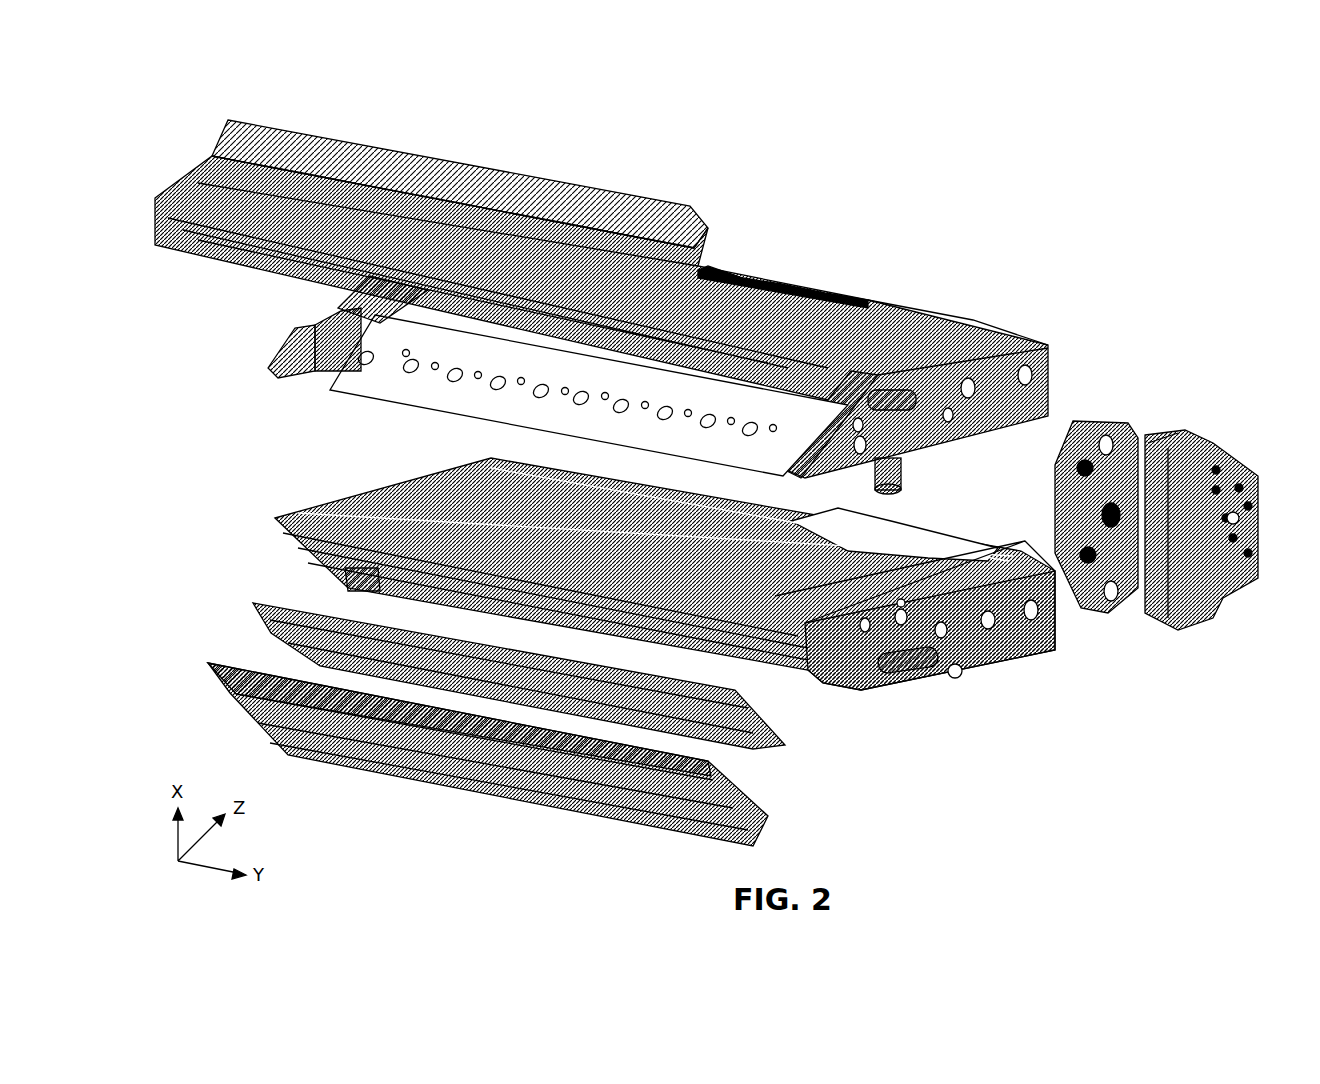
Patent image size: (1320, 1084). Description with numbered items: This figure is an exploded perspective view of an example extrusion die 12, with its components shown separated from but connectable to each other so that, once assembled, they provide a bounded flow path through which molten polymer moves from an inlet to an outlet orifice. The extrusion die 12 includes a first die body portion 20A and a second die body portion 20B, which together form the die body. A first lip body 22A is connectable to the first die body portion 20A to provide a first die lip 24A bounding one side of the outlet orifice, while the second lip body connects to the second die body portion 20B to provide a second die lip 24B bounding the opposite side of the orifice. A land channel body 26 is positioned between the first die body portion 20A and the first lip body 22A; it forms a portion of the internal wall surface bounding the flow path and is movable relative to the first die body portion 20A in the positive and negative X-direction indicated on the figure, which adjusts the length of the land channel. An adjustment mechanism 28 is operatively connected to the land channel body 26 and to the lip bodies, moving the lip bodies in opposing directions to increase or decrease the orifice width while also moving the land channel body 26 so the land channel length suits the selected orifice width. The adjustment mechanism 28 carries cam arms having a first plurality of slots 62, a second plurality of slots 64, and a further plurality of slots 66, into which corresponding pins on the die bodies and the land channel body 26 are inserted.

The extrusion die 12 is at (1187, 190).
The first die body portion 20A is at (1048, 628).
The second die body portion 20B is at (1040, 342).
The first lip body 22A is at (762, 809).
The first die lip 24A is at (215, 653).
The second die lip 24B is at (150, 238).
The land channel body 26 is at (778, 739).
The adjustment mechanism 28 is at (1233, 405).
The first plurality of slots 62 is at (335, 575).
The second plurality of slots 64 is at (270, 523).
The plurality of slots 66 is at (276, 368).